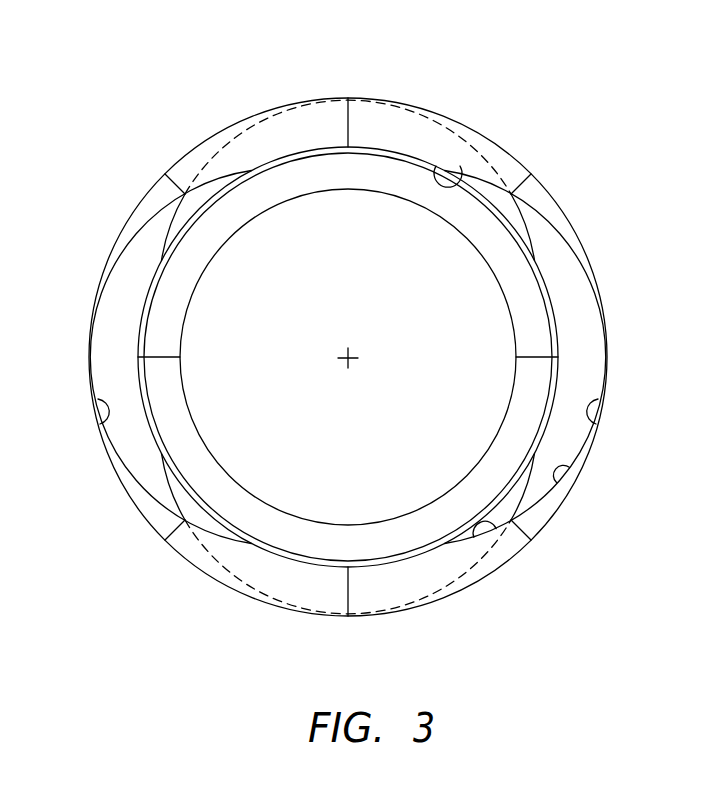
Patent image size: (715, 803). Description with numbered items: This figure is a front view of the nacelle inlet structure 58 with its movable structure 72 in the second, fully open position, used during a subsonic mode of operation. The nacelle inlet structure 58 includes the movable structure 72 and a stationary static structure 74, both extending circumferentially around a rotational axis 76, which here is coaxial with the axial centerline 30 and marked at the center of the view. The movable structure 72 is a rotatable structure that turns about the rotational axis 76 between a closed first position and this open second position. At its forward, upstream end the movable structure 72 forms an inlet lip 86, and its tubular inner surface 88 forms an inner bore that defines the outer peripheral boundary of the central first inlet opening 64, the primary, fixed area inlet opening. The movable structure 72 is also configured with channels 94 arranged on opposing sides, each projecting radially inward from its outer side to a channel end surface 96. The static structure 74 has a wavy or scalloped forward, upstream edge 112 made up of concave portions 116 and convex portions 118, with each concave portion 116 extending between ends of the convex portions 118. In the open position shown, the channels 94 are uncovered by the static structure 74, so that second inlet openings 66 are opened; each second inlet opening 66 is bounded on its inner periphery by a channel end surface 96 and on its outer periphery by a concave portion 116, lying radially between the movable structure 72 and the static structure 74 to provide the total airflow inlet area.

The nacelle inlet structure 58 is at (581, 103).
The static structure 74 is at (491, 139).
The second inlet opening 66 is at (351, 357).
The channel end surface 96 is at (143, 306).
The channel 94 is at (137, 276).
The inner surface 88 is at (187, 398).
The first inlet opening 64 is at (358, 295).
The movable structure 72 is at (469, 250).
The inlet lip 86 is at (307, 180).
The axial centerline 30 is at (356, 396).
The rotational axis 76 is at (350, 362).
The convex portion 118 is at (442, 164).
The forward, upstream edge 112 is at (567, 486).
The concave portion 116 is at (96, 423).